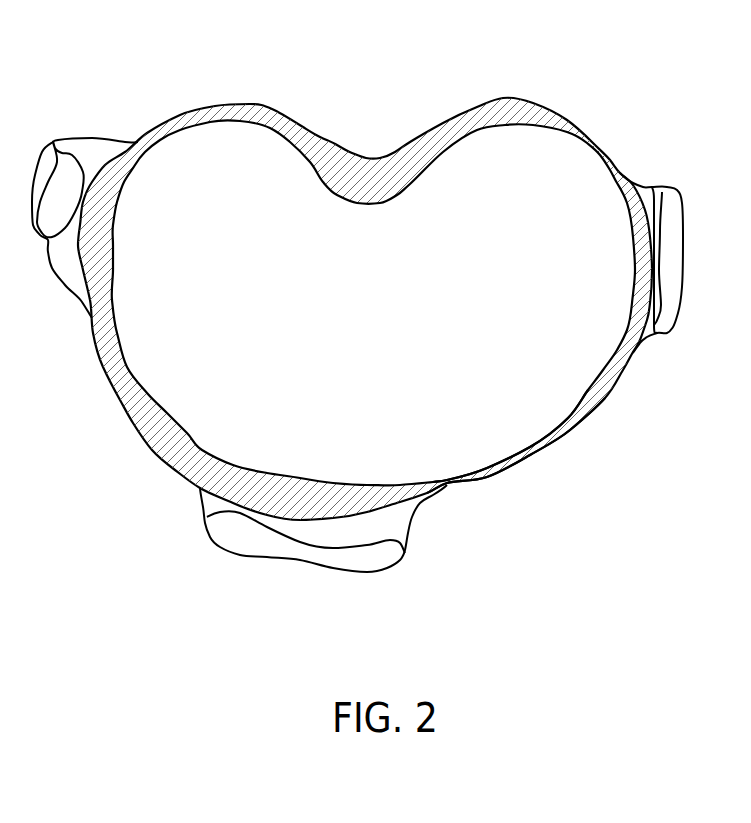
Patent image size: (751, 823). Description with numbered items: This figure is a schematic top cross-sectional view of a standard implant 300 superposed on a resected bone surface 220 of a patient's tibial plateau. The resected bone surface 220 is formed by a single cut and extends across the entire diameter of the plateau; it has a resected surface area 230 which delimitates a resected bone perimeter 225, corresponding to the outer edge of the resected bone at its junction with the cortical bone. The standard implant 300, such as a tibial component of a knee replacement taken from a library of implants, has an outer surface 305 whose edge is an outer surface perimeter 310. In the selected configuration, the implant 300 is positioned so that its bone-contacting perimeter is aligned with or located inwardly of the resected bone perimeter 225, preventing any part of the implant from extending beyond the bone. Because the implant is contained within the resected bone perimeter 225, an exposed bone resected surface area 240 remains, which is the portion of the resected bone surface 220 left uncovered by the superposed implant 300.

The resected bone perimeter 225 is at (502, 97).
The resected bone surface 220 is at (395, 309).
The resected surface area 230 is at (633, 334).
The outer surface 305 is at (574, 185).
The standard implant 300 is at (518, 415).
The outer surface perimeter 310 is at (445, 496).
The exposed bone resected surface area 240 is at (211, 474).